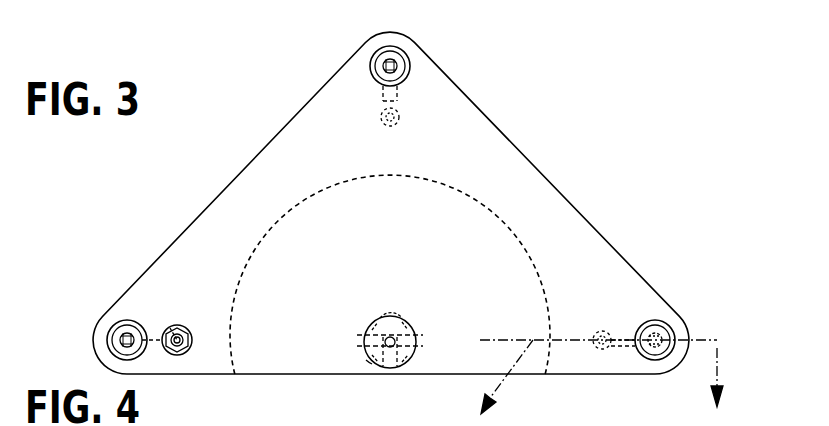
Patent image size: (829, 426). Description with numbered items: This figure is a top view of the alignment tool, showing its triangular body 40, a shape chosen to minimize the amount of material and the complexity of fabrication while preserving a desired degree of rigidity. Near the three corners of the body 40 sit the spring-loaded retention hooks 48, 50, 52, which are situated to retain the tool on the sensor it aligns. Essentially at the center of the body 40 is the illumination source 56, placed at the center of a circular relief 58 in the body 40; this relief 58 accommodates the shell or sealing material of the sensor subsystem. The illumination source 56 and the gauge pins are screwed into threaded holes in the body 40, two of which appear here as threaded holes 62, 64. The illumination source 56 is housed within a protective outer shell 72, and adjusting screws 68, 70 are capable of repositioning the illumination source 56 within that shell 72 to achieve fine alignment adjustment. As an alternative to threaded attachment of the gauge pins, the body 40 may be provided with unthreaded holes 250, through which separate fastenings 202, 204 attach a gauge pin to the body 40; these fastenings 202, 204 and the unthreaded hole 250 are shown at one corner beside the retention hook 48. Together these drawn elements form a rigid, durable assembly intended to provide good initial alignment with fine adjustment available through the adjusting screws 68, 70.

The body 40 is at (548, 197).
The spring-loaded retention hook 48 is at (107, 340).
The spring-loaded retention hook 50 is at (377, 57).
The spring-loaded retention hook 52 is at (676, 336).
The illumination source 56 is at (442, 344).
The circular relief 58 is at (378, 244).
The threaded hole 62 is at (380, 118).
The threaded hole 64 is at (606, 332).
The adjusting screw 68 is at (380, 314).
The adjusting screw 70 is at (393, 314).
The protective outer shell 72 is at (368, 358).
The separate fastening 202 is at (173, 354).
The separate fastening 204 is at (188, 356).
The unthreaded hole 250 is at (170, 328).